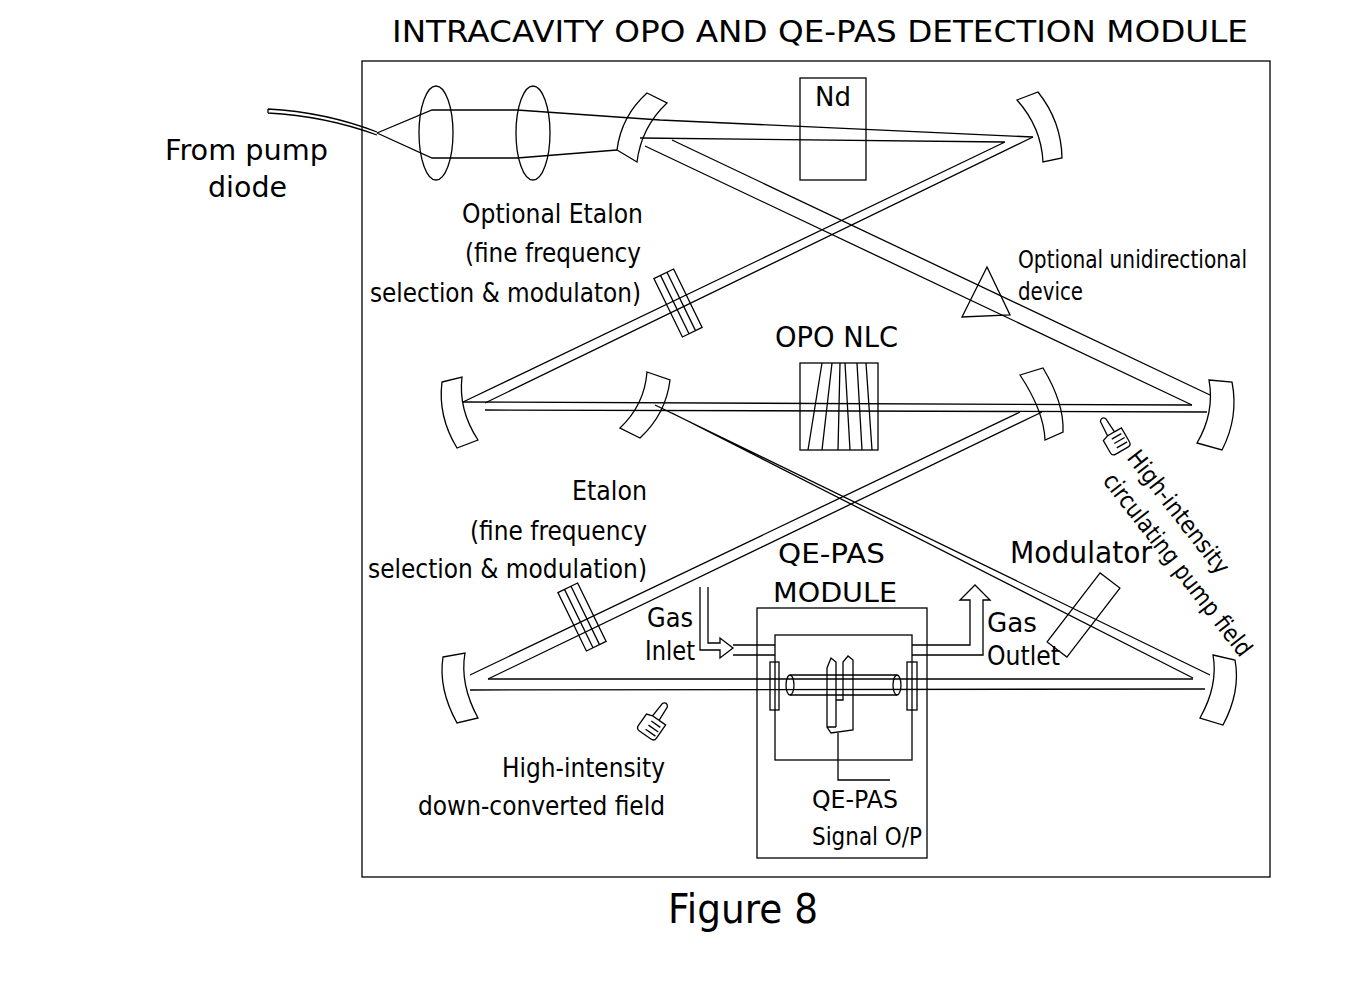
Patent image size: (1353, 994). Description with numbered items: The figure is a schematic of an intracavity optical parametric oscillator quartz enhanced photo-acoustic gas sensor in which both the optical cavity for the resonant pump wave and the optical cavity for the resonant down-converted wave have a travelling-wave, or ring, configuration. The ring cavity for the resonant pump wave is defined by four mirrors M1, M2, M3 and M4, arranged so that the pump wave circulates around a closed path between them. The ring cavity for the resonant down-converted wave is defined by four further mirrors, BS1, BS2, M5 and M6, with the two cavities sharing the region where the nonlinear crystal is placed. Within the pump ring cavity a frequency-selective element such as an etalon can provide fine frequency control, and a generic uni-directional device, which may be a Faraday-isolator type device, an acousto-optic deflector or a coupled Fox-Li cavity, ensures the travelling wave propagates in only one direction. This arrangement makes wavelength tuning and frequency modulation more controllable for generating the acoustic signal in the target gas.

The mirror M1 is at (646, 146).
The mirror M2 is at (1045, 148).
The mirror M3 is at (453, 433).
The mirror M4 is at (1218, 435).
The mirror M5 is at (454, 708).
The mirror M6 is at (1221, 709).
The mirror (beam splitter) BS1 is at (615, 414).
The mirror (beam splitter) BS2 is at (1052, 425).